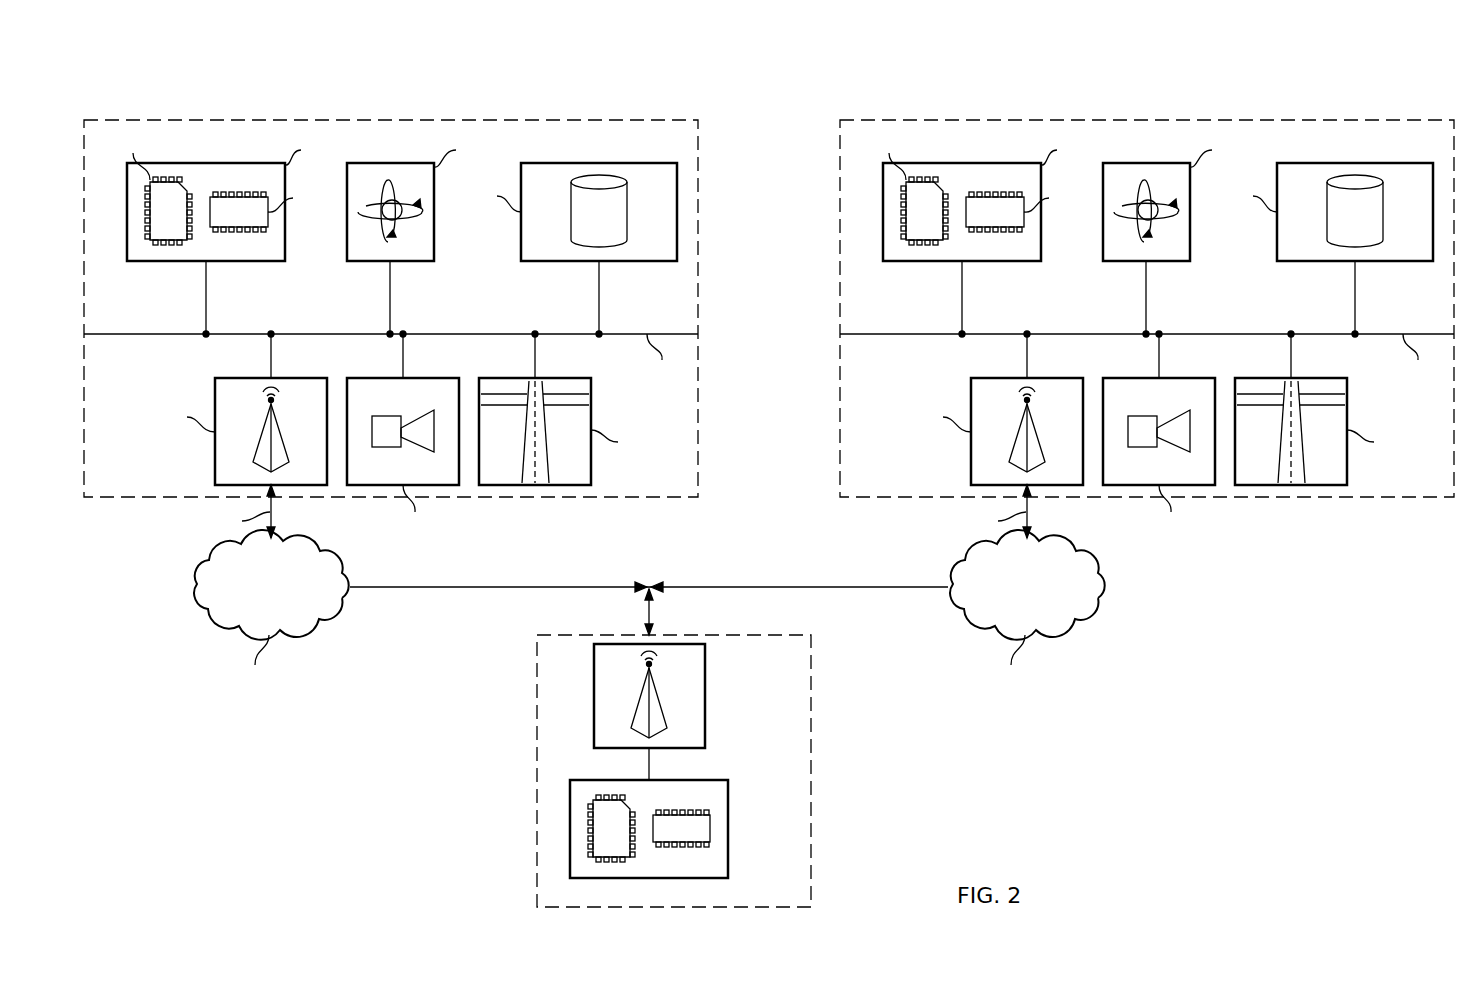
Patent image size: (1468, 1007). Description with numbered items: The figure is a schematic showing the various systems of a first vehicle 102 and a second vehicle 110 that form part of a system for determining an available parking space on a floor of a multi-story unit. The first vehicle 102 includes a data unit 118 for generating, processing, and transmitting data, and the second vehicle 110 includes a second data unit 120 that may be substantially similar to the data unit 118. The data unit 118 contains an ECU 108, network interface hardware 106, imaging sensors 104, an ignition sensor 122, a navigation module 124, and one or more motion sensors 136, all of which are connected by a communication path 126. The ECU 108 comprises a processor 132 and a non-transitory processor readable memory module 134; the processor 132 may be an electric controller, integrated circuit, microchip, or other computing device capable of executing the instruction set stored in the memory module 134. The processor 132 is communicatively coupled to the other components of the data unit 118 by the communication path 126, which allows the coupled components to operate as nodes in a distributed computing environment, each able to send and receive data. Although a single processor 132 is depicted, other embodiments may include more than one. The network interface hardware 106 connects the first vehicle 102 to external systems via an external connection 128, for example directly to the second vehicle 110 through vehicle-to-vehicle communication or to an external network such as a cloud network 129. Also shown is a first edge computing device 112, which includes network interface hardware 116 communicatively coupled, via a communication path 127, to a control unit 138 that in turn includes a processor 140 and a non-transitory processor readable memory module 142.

The first vehicle 102 is at (525, 85).
The imaging sensors 104 is at (781, 459).
The network interface hardware 106 is at (611, 431).
The ECU 108 is at (606, 195).
The second vehicle 110 is at (1253, 80).
The first edge computing device 112 is at (811, 695).
The network interface hardware 116 is at (705, 695).
The data unit 118 is at (406, 120).
The second data unit 120 is at (1162, 120).
The ignition sensor 122 is at (943, 212).
The navigation module 124 is at (948, 431).
The communication path 126 is at (769, 326).
The communication path 127 is at (649, 772).
The external connection 128 is at (613, 511).
The cloud network 129 is at (649, 612).
The processor 132 is at (530, 187).
The non-transitory processor readable memory module 134 is at (651, 208).
The motion sensors 136 is at (801, 200).
The control unit 138 is at (728, 782).
The processor 140 is at (593, 798).
The non-transitory processor readable memory module 142 is at (710, 828).